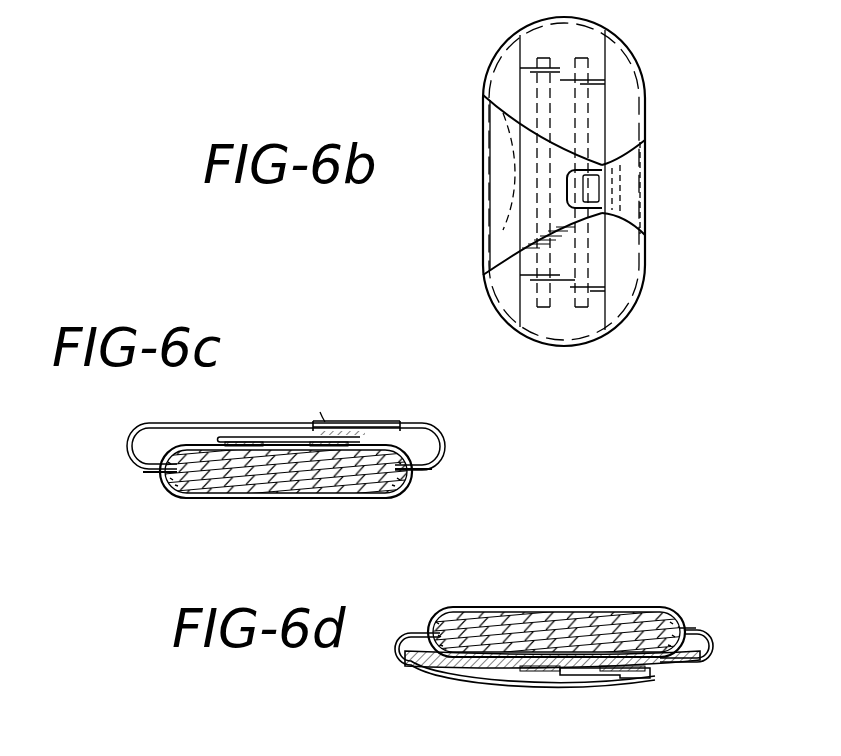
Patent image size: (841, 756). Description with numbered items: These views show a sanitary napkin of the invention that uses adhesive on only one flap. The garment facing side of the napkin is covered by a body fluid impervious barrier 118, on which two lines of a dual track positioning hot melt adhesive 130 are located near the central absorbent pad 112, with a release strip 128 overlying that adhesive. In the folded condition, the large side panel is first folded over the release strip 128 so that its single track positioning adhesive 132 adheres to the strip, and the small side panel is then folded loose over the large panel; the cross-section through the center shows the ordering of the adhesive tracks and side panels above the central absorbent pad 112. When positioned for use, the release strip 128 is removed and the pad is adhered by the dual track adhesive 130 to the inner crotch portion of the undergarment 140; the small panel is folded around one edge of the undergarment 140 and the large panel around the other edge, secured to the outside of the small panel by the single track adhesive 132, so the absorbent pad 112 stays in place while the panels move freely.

In FIG. 6B, the body fluid impervious barrier 118 is at (508, 296).
In FIG. 6C, the central absorbent pad 112 is at (290, 488).
In FIG. 6D, the central absorbent pad 112 is at (585, 625).
In FIG. 6C, the release strip 128 is at (213, 437).
In FIG. 6C, the dual track positioning hot melt adhesive 130 is at (250, 441).
In FIG. 6D, the dual track positioning hot melt adhesive 130 is at (585, 668).
In FIG. 6C, the single track positioning hot melt adhesive 132 is at (345, 426).
In FIG. 6D, the single track positioning hot melt adhesive 132 is at (640, 678).
In FIG. 6D, the undergarment 140 is at (488, 664).